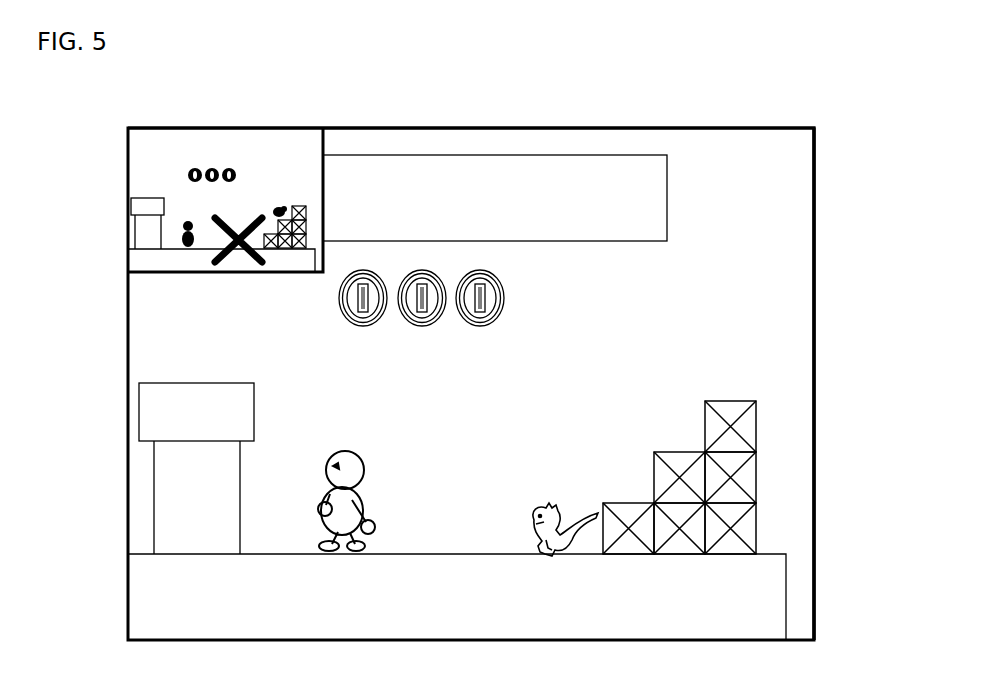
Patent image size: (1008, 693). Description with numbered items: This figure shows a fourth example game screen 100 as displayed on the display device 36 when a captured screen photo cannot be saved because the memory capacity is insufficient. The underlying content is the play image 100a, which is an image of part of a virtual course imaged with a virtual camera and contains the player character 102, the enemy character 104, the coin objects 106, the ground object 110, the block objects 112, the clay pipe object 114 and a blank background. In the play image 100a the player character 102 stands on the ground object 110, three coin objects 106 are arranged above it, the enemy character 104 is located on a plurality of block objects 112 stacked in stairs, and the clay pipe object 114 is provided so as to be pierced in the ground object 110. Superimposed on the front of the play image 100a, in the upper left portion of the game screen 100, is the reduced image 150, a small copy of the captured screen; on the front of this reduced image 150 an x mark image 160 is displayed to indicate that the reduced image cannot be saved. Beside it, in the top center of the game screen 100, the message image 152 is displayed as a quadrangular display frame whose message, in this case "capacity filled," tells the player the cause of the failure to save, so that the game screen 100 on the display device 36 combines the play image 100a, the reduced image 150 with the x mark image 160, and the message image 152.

The game screen 100 is at (471, 363).
The play image 100a is at (798, 155).
The display device 36 is at (840, 483).
The reduced image 150 is at (300, 155).
The message image 152 is at (557, 163).
The x mark image 160 is at (250, 258).
The coin object 106 is at (532, 297).
The clay pipe object 114 is at (172, 489).
The ground object 110 is at (700, 627).
The block object 112 is at (737, 389).
The player character 102 is at (385, 520).
The enemy character 104 is at (567, 537).